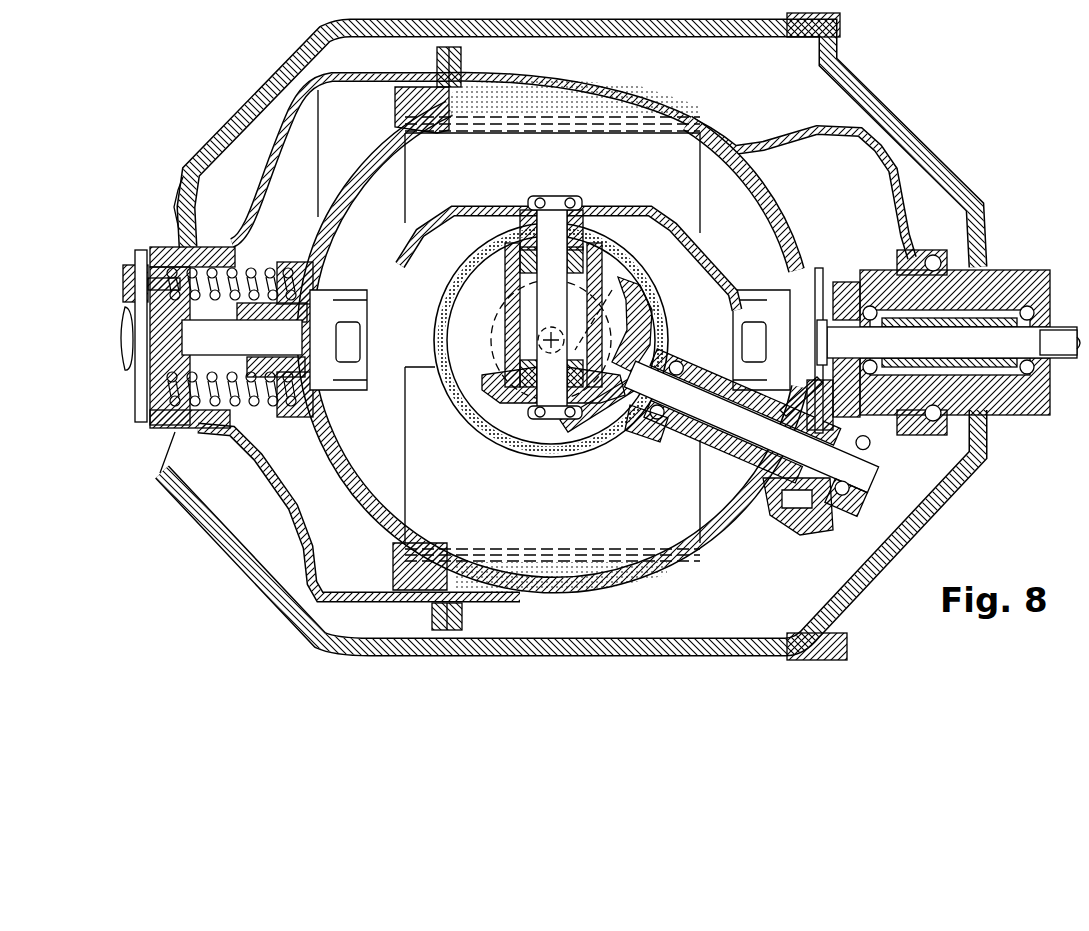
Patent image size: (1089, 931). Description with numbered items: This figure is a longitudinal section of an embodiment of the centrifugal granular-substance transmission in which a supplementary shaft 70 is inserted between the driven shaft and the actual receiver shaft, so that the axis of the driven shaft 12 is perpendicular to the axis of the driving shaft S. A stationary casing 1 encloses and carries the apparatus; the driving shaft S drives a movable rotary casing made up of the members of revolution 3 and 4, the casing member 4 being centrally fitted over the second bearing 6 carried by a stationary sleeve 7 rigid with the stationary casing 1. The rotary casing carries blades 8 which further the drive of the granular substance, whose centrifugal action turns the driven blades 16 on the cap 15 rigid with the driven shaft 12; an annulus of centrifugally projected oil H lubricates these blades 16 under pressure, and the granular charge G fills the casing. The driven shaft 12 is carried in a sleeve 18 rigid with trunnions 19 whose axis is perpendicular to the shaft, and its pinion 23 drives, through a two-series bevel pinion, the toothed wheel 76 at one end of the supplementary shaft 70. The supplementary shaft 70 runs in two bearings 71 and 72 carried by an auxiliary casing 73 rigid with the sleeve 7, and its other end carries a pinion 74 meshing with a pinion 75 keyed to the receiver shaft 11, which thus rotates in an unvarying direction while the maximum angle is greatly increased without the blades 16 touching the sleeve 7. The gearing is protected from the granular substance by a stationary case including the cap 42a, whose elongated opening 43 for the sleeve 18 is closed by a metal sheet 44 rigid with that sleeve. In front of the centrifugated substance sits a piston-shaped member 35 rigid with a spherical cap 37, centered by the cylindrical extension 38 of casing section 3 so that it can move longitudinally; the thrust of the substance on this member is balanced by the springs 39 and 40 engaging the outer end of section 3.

The stationary casing 1 is at (212, 533).
The member of revolution 3 is at (253, 493).
The casing member 4 is at (695, 562).
The second bearing 6 is at (930, 257).
The stationary sleeve 7 is at (1000, 290).
The blades 8 is at (488, 88).
The receiver shaft 11 is at (1058, 358).
The driven shaft 12 is at (554, 217).
The cap 15 is at (420, 246).
The driven blades 16 is at (324, 296).
The sleeve 18 is at (506, 293).
The trunnion 19 is at (551, 329).
The pinion 23 is at (497, 393).
The piston-shaped member 35 is at (395, 108).
The spherical cap 37 is at (357, 176).
The cylindrical extension 38 is at (242, 337).
The spring 39 is at (250, 272).
The spring 40 is at (260, 400).
The cap 42a is at (482, 432).
The elongated opening 43 is at (447, 286).
The metal sheet 44 is at (457, 318).
The supplementary shaft 70 is at (752, 452).
The bearing 71 is at (838, 506).
The bearing 72 is at (652, 440).
The auxiliary casing 73 is at (722, 447).
The pinion 74 is at (788, 522).
The pinion 75 is at (838, 280).
The toothed wheel 76 is at (584, 440).
The driving shaft S is at (150, 336).
The annulus of centrifugally projected oil H is at (553, 125).
The liquid G is at (622, 113).